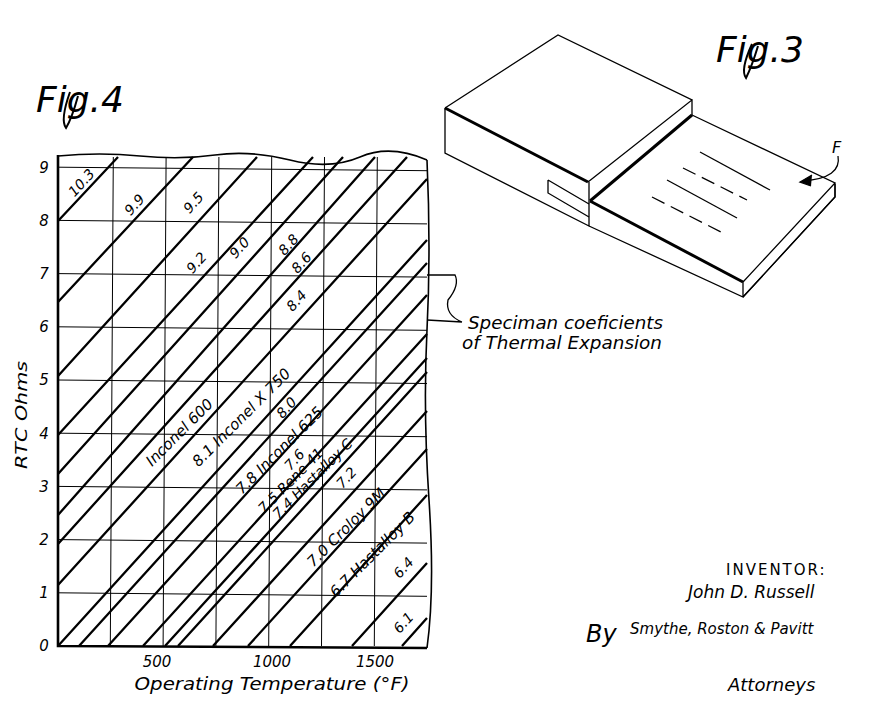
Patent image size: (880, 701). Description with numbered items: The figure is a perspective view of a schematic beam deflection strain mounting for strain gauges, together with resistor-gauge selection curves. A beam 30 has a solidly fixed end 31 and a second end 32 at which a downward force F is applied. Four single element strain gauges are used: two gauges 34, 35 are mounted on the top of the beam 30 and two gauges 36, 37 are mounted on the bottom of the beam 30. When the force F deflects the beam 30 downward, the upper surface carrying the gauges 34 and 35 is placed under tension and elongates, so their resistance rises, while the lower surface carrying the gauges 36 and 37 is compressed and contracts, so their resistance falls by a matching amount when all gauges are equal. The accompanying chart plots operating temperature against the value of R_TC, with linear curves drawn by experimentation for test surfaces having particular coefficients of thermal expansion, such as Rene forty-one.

The beam 30 is at (717, 283).
The solidly fixed end 31 is at (571, 205).
The second end 32 is at (762, 272).
The strain gauge 34 is at (718, 160).
The strain gauge 35 is at (730, 216).
The strain gauge 36 is at (747, 202).
The strain gauge 37 is at (678, 209).